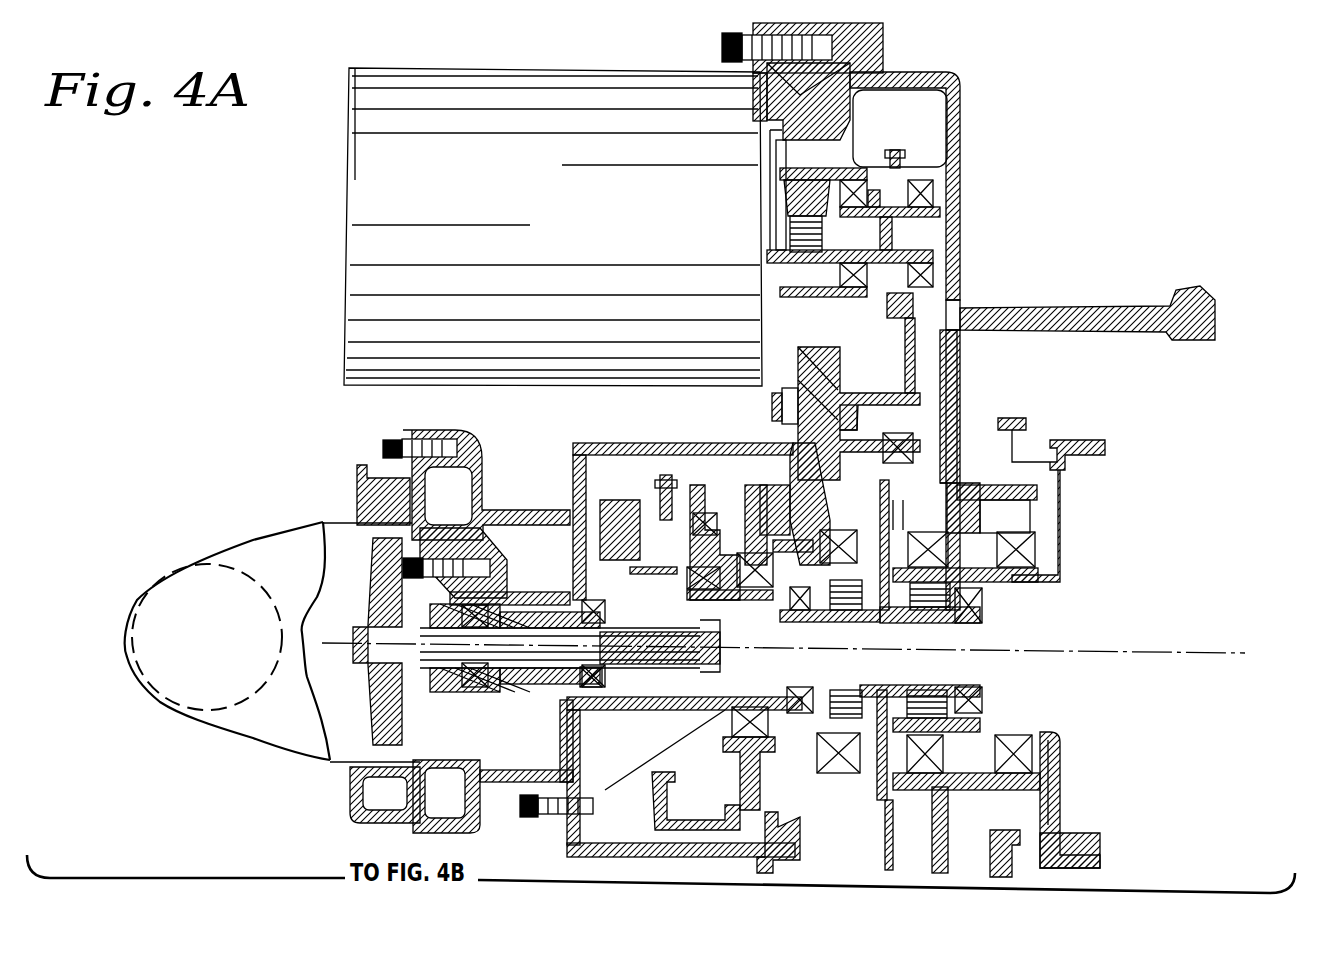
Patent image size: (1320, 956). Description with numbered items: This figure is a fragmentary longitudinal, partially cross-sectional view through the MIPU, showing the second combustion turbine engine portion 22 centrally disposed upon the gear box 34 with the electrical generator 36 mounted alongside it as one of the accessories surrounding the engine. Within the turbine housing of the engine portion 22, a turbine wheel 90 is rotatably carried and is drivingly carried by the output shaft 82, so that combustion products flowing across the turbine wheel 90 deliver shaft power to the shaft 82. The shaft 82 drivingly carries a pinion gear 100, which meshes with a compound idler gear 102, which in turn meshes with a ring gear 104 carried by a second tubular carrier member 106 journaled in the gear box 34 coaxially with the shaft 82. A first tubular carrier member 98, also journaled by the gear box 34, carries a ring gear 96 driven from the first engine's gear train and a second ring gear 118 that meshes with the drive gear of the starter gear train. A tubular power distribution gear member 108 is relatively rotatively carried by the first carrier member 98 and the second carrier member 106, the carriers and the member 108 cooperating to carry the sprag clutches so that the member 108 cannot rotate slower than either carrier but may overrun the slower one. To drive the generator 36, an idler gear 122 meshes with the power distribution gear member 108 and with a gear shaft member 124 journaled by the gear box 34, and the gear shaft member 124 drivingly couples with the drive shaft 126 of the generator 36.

The second combustion turbine engine portion 22 is at (345, 787).
The gear box 34 is at (958, 240).
The electrical generator 36 is at (350, 130).
The output shaft 82 is at (555, 660).
The turbine wheel 90 is at (380, 696).
The ring gear 96 is at (1105, 862).
The first tubular carrier member 98 is at (1040, 585).
The pinion gear 100 is at (650, 672).
The compound idler gear 102 is at (665, 488).
The ring gear 104 is at (690, 470).
The second tubular carrier member 106 is at (770, 600).
The tubular power distribution gear member 108 is at (882, 624).
The second ring gear 118 is at (1000, 866).
The idler gear 122 is at (886, 348).
The gear shaft member 124 is at (918, 125).
The drive shaft 126 is at (824, 232).